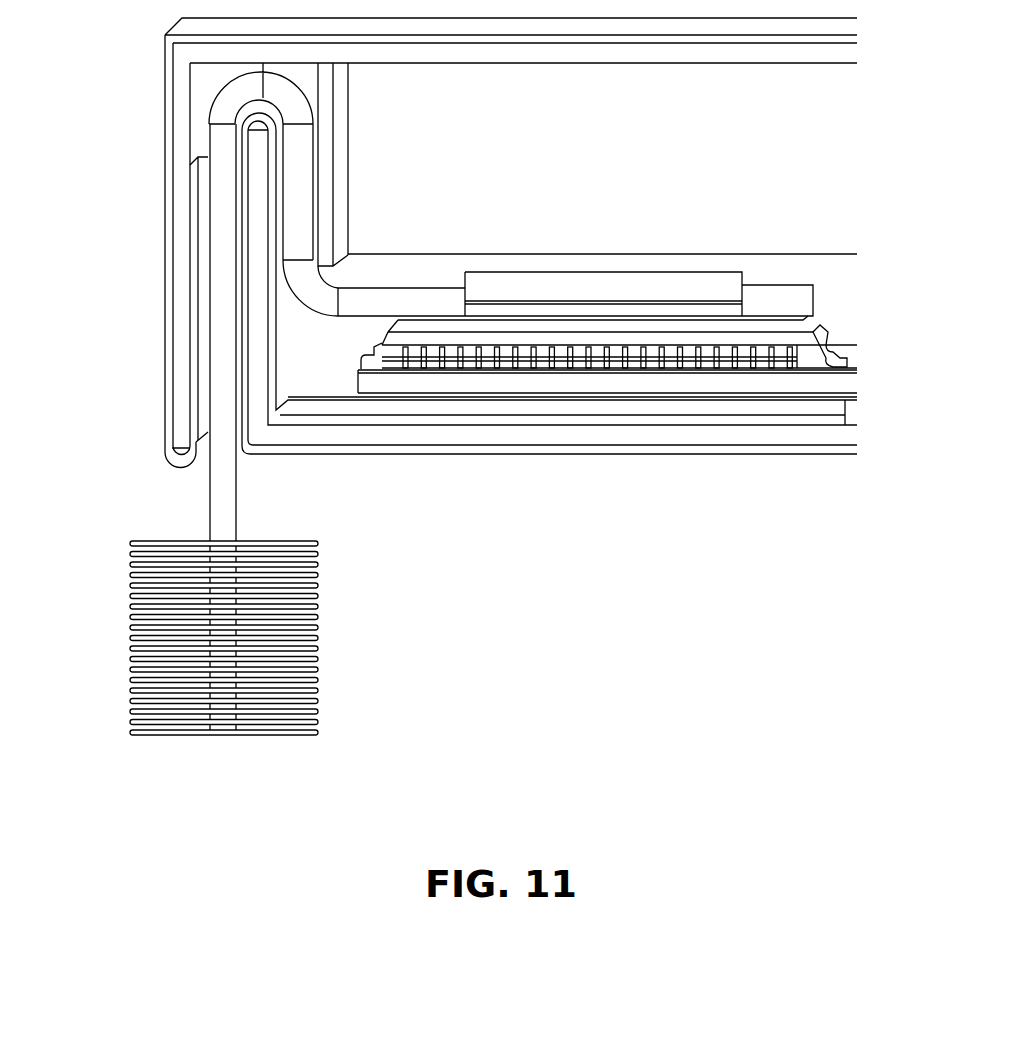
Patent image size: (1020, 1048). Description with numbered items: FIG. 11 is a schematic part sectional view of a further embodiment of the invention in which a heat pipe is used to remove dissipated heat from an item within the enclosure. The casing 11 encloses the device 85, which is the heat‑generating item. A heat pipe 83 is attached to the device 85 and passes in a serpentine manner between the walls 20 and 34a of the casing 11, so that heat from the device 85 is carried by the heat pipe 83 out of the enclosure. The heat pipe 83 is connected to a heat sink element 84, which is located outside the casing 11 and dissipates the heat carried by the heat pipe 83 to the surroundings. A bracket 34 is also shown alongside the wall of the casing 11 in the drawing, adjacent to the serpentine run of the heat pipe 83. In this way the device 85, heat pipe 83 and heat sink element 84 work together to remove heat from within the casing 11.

The casing 11 is at (165, 122).
The bracket 34 is at (178, 212).
The wall 34a is at (340, 210).
The wall 20 is at (258, 377).
The heat pipe 83 is at (240, 500).
The heat sink element 84 is at (322, 640).
The device 85 is at (700, 368).